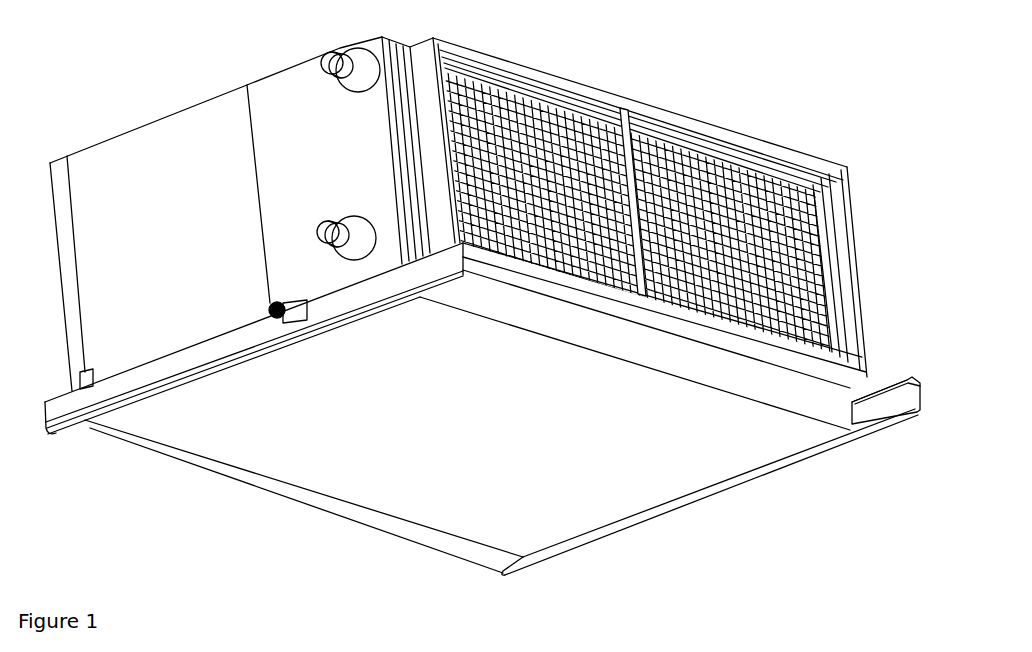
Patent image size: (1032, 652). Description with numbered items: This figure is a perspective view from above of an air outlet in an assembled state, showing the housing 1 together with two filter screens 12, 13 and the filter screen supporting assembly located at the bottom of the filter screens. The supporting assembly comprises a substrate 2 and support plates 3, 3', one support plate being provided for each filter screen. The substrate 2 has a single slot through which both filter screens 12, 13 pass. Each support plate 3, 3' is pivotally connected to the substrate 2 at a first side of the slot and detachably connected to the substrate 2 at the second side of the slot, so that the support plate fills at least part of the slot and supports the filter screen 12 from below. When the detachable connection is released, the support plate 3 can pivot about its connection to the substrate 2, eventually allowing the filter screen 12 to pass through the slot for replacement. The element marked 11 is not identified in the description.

The housing 1 is at (692, 428).
The substrate 2 is at (833, 340).
The support plate 3 is at (850, 426).
The support plate 3' is at (325, 338).
The frame side member 11 is at (845, 290).
The filter screen 12 is at (830, 200).
The filter screen 13 is at (605, 110).